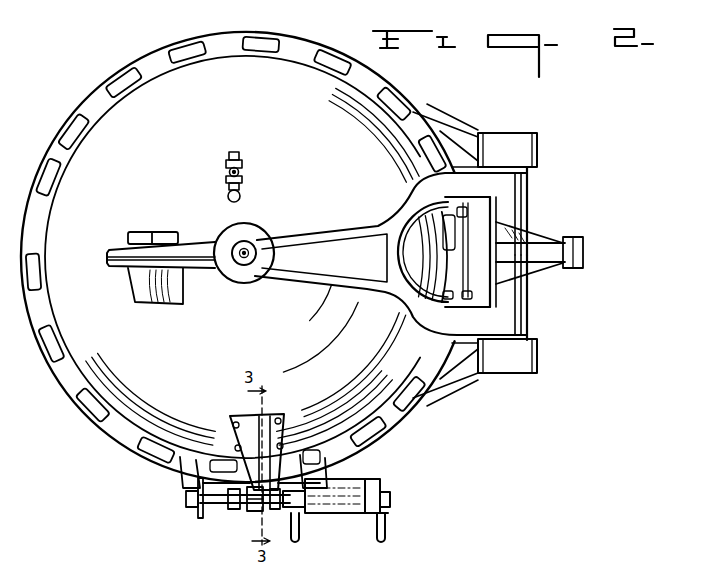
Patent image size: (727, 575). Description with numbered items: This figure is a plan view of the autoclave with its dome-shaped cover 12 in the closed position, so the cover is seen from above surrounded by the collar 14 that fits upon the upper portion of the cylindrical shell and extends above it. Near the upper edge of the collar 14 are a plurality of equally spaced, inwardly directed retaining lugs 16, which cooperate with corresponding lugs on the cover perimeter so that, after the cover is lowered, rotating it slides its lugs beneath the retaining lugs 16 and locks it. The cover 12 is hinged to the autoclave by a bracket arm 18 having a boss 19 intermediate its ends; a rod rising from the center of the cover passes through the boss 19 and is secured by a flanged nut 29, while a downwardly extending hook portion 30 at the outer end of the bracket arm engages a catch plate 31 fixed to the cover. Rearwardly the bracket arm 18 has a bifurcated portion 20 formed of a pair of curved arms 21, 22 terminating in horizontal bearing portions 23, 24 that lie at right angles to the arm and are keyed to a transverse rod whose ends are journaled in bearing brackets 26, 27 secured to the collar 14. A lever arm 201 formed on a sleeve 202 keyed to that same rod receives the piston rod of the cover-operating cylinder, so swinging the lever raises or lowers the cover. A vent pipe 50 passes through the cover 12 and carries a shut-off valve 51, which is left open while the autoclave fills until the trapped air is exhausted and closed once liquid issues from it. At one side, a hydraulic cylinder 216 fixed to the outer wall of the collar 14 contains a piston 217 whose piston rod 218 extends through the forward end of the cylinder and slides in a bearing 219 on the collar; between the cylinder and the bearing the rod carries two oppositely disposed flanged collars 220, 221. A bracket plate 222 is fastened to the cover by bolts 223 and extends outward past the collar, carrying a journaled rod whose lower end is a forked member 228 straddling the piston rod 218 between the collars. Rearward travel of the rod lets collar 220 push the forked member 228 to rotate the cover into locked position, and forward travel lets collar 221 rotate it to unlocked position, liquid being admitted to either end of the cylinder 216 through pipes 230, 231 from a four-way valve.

The cover 12 is at (238, 50).
The collar 14 is at (85, 100).
The retaining lugs 16 is at (43, 234).
The bracket arm 18 is at (205, 250).
The boss 19 is at (252, 246).
The bifurcated portion 20 is at (390, 250).
The curved arms 21 is at (405, 180).
The lower bracket leg 22 is at (407, 312).
The bearing portion 23 is at (527, 184).
The bearing portion 24 is at (527, 320).
The bearing bracket 26 is at (538, 148).
The bearing bracket 27 is at (538, 352).
The flanged nut 29 is at (257, 284).
The hook portion 30 is at (128, 240).
The catch plate 31 is at (145, 288).
The vent pipe 50 is at (236, 190).
The shut-off valve 51 is at (247, 175).
The lever arm 201 is at (548, 243).
The sleeve 202 is at (530, 276).
The cylinder 216 is at (312, 513).
The piston 217 is at (345, 485).
The piston rod 218 is at (218, 505).
The bearing 219 is at (194, 509).
The flanged collar 220 is at (250, 500).
The flanged collar 221 is at (276, 503).
The bracket plate 222 is at (246, 416).
The bolts 223 is at (272, 415).
The forked member 228 is at (246, 481).
The pipe 230 is at (297, 543).
The pipe 231 is at (386, 526).